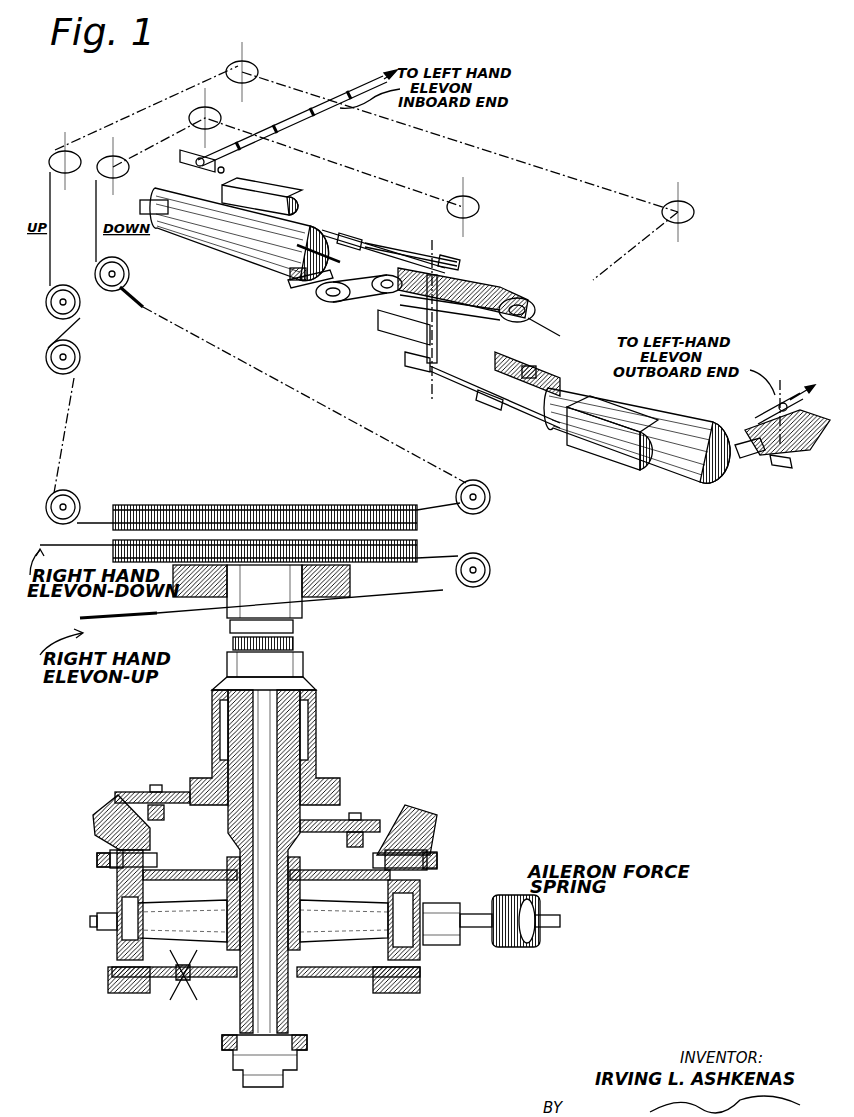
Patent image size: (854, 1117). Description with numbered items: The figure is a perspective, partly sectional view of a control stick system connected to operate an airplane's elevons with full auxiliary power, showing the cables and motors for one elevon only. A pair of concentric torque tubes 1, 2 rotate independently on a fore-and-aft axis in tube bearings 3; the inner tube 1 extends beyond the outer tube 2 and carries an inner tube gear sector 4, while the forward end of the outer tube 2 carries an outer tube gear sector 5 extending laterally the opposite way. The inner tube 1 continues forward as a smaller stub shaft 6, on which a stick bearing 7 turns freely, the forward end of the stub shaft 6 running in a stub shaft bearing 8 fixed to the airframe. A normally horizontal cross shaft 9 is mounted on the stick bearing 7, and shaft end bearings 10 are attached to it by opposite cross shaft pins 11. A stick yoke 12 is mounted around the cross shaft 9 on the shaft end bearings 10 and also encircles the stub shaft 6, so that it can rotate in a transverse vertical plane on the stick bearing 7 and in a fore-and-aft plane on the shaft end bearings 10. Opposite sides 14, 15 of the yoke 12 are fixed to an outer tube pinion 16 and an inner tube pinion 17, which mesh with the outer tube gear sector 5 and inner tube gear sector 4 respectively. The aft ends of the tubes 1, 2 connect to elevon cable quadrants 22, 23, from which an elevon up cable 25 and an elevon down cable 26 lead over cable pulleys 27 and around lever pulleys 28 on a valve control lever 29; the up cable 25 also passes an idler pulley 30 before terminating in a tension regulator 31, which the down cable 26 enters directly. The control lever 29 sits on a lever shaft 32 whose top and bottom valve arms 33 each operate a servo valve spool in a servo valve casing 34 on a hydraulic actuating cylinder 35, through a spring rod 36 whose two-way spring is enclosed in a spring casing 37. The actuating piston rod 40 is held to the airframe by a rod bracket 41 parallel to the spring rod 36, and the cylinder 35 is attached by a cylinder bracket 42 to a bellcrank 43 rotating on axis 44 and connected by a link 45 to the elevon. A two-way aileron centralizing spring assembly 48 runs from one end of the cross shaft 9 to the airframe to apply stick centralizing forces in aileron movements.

The inner torque tube 1 is at (300, 642).
The outer torque tube 2 is at (305, 665).
The tube bearings 3 is at (226, 600).
The inner tube gear sector 4 is at (395, 815).
The outer tube gear sector 5 is at (110, 800).
The stub shaft 6 is at (240, 1005).
The stick bearing 7 is at (285, 900).
The stub shaft bearing 8 is at (290, 1040).
The cross shaft 9 is at (350, 942).
The shaft end bearings 10 is at (118, 910).
The cross shaft pins 11 is at (100, 920).
The stick yoke 12 is at (200, 970).
The yoke side 14 is at (112, 985).
The yoke side 15 is at (395, 990).
The outer tube pinion 16 is at (95, 828).
The inner tube pinion 17 is at (435, 845).
The elevon cable quadrant 22 is at (405, 505).
The elevon cable quadrant 23 is at (376, 568).
The elevon up cable 25 is at (595, 280).
The elevon down cable 26 is at (440, 184).
The cable pulleys 27 is at (249, 80).
The lever pulleys 28 is at (318, 297).
The valve control lever 29 is at (360, 298).
The idler pulley 30 is at (440, 258).
The tension regulator 31 is at (385, 332).
The lever shaft 32 is at (488, 280).
The valve arms 33 is at (440, 272).
The servo valve casing 34 is at (270, 192).
The hydraulic actuating cylinder 35 is at (440, 335).
The spring rod 36 is at (332, 226).
The spring casing 37 is at (365, 236).
The actuating piston rod 40 is at (290, 272).
The rod bracket 41 is at (292, 285).
The cylinder bracket 42 is at (140, 207).
The bellcrank 43 is at (168, 175).
The axis 44 is at (228, 170).
The link 45 is at (262, 138).
The aileron centralizing spring assembly 48 is at (560, 920).